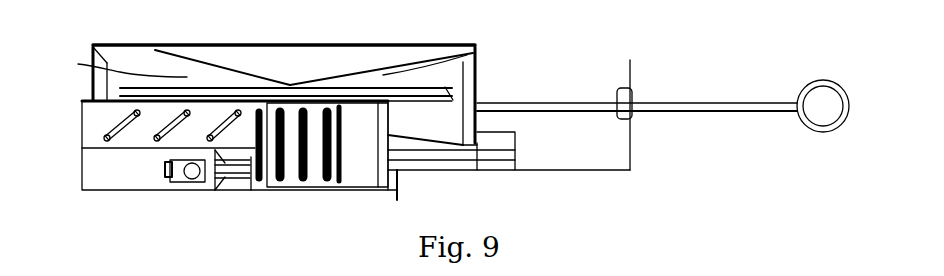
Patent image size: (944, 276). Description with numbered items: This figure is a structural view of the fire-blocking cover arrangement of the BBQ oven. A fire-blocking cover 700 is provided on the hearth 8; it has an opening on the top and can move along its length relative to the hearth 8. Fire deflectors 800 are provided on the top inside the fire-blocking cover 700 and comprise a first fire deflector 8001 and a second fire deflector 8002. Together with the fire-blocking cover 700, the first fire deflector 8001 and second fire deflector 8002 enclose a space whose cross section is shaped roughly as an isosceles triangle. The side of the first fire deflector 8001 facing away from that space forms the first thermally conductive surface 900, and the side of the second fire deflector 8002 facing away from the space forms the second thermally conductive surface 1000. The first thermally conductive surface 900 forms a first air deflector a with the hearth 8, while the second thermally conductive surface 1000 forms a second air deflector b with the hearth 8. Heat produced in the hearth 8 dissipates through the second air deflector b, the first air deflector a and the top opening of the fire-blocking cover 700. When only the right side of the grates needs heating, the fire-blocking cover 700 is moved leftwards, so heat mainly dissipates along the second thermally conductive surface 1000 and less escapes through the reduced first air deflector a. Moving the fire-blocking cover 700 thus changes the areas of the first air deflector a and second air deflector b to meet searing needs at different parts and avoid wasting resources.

The hearth 8 is at (307, 175).
The fire-blocking cover 700 is at (472, 83).
The fire deflectors 800 is at (250, 55).
The first fire deflector 8001 is at (183, 57).
The second fire deflector 8002 is at (390, 47).
The first thermally conductive surface 900 is at (273, 80).
The second thermally conductive surface 1000 is at (327, 73).
The first air deflector a is at (78, 64).
The second air deflector b is at (478, 55).